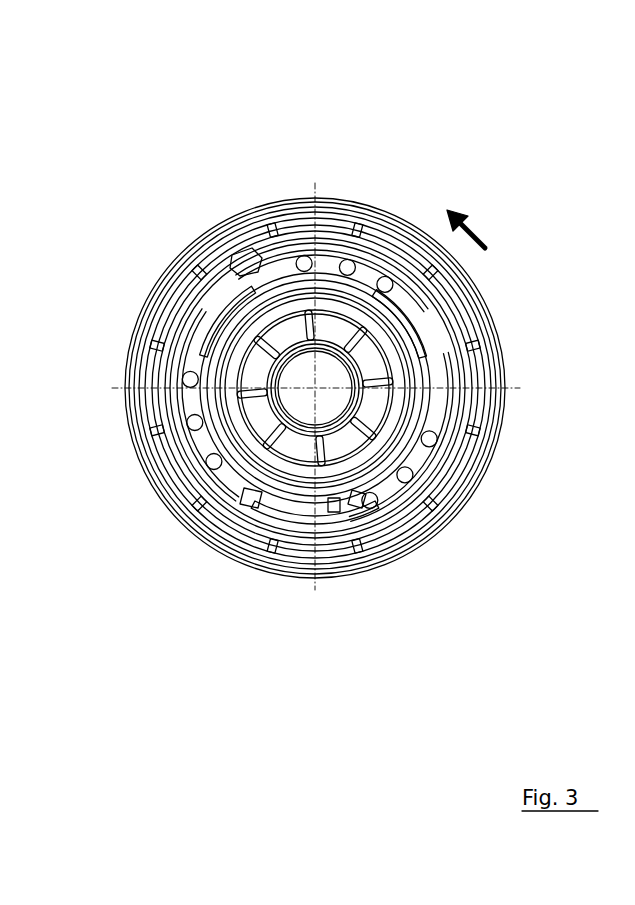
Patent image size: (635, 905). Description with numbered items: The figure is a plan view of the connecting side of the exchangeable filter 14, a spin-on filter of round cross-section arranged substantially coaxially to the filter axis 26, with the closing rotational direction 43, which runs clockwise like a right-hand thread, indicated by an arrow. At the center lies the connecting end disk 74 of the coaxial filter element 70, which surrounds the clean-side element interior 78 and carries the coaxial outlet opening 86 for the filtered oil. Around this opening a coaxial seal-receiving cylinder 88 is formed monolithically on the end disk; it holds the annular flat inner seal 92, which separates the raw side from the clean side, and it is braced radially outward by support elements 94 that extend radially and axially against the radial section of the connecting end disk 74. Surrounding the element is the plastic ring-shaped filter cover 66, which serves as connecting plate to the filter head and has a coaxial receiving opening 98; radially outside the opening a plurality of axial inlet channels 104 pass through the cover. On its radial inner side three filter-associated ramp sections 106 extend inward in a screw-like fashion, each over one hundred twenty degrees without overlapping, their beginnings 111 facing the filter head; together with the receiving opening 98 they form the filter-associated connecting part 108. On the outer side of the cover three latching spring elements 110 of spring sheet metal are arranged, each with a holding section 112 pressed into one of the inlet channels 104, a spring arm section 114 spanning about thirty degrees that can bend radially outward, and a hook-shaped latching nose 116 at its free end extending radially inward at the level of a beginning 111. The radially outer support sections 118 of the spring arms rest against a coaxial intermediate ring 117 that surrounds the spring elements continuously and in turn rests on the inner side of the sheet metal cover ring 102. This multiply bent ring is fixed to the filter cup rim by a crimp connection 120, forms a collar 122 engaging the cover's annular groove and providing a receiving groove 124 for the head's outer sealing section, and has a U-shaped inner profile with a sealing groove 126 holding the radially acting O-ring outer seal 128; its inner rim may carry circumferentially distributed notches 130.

The exchangeable filter 14 is at (515, 118).
The filter axis 26 is at (263, 410).
The closing rotational direction 43 is at (470, 230).
The filter cover 66 is at (371, 275).
The filter element 70 is at (263, 235).
The connecting end disk 74 is at (400, 413).
The element interior 78 is at (337, 368).
The outlet opening 86 is at (305, 296).
The seal-receiving cylinder 88 is at (260, 370).
The inner seal 92 is at (263, 383).
The support elements 94 is at (455, 357).
The receiving opening 98 is at (210, 343).
The sheet metal cover ring 102 is at (268, 213).
The inlet channels 104 is at (205, 478).
The filter-associated ramp sections 106 is at (263, 293).
The filter-associated connecting part 108 is at (457, 325).
The latching spring elements 110 is at (293, 520).
The beginnings 111 is at (413, 280).
The holding section 112 is at (260, 505).
The spring arm sections 114 is at (280, 520).
The latching nose 116 is at (358, 506).
The intermediate ring 117 is at (412, 485).
The support sections 118 is at (333, 512).
The crimp connection 120 is at (147, 298).
The collar 122 is at (488, 370).
The receiving groove 124 is at (468, 448).
The sealing groove 126 is at (245, 520).
The outer seal 128 is at (220, 510).
The notches 130 is at (210, 280).